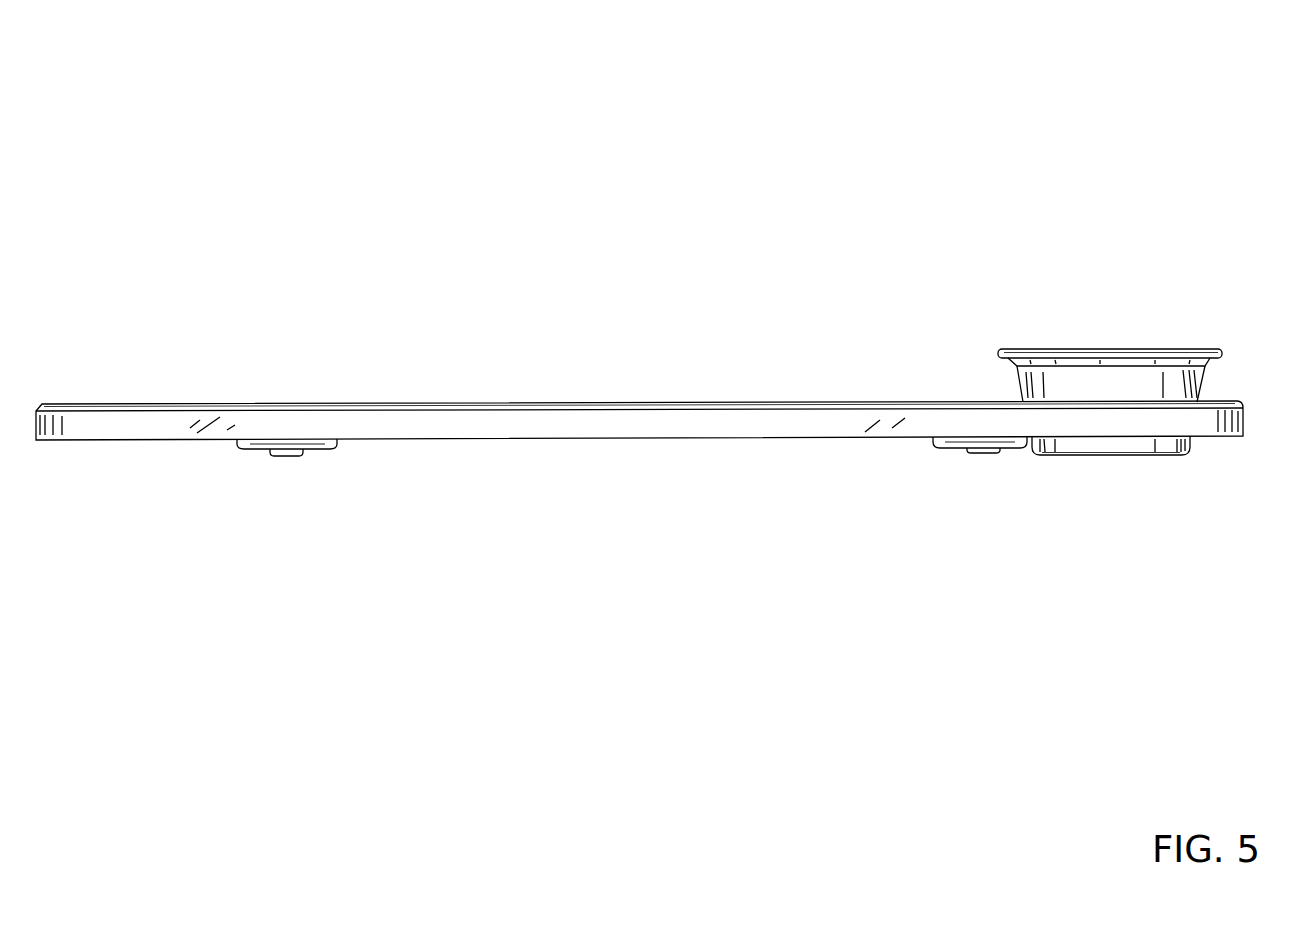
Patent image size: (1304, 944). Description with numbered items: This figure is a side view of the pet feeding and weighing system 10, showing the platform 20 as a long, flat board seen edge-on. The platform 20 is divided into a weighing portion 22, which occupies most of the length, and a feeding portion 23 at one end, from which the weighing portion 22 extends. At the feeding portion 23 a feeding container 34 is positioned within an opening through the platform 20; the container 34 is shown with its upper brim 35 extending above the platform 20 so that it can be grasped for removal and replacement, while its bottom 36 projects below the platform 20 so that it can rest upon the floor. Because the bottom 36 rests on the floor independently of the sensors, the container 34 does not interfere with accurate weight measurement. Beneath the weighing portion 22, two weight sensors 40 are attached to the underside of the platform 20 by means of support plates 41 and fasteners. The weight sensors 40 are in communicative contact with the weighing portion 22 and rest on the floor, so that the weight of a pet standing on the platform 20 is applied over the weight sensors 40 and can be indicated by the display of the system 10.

The pet feeding and weighing system 10 is at (222, 160).
The platform 20 is at (355, 392).
The weighing portion 22 is at (622, 403).
The feeding portion 23 is at (1233, 402).
The cup holder flange 35 is at (1002, 350).
The feeding container 34 is at (1175, 465).
The bottom 36 is at (1117, 455).
The weight sensors 40 is at (270, 464).
The support plates 41 is at (320, 449).